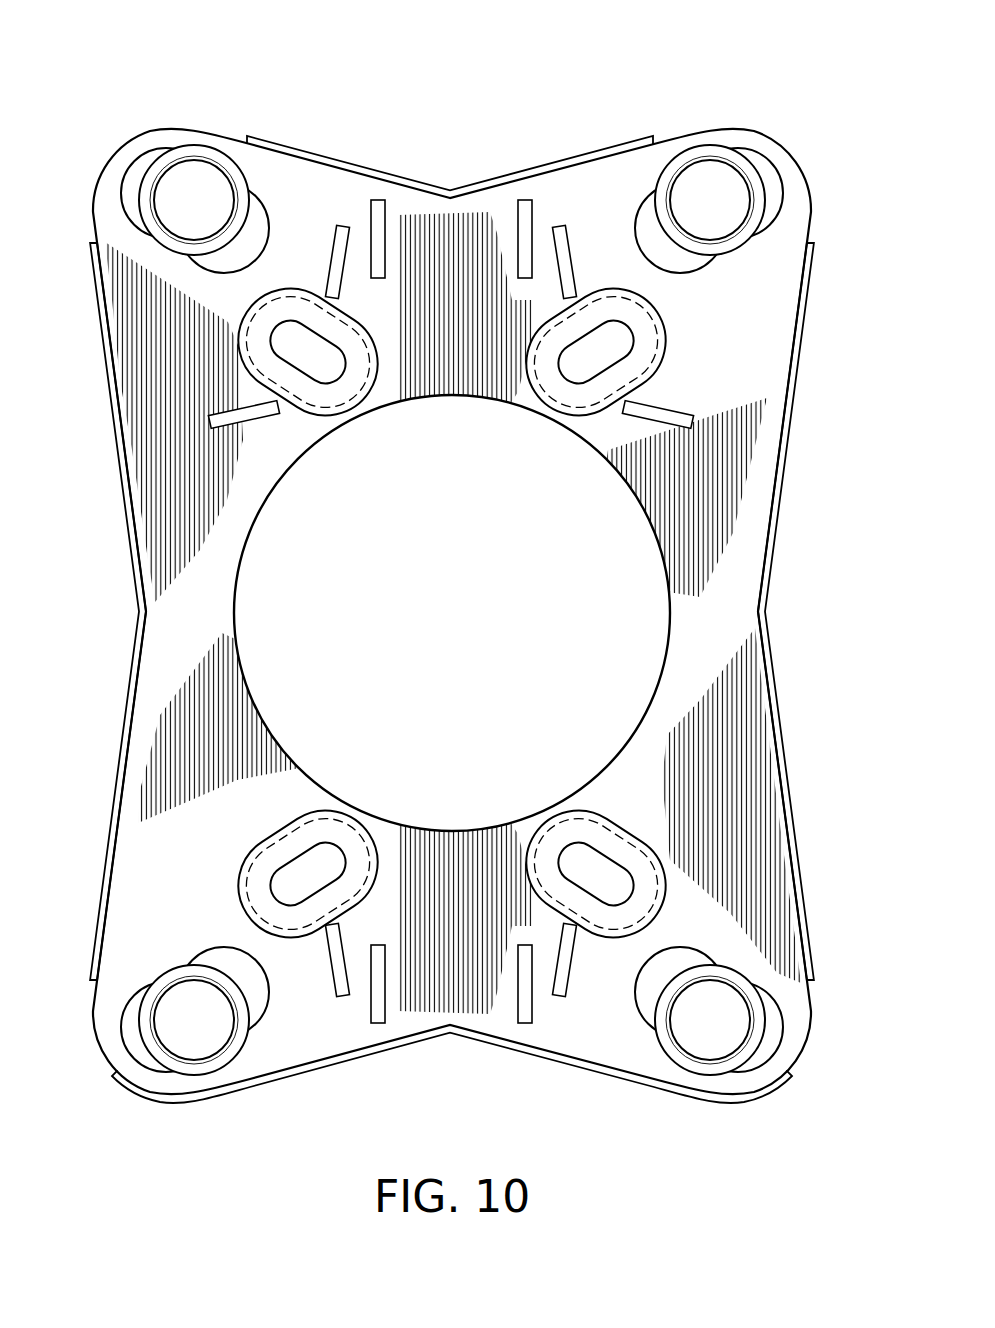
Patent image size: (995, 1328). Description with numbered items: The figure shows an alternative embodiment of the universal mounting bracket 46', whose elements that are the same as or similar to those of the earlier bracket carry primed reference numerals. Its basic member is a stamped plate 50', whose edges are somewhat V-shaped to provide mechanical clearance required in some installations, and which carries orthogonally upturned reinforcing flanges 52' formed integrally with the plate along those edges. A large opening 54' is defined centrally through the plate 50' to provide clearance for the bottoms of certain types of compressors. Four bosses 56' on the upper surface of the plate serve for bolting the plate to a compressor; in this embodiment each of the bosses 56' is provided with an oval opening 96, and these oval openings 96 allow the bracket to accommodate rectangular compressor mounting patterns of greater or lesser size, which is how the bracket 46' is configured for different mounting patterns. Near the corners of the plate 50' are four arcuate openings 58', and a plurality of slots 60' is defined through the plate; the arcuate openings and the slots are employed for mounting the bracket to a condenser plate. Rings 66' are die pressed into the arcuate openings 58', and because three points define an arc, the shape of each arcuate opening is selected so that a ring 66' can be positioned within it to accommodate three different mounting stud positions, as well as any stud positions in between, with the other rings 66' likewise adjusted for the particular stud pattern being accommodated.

The universal mounting bracket 46' is at (462, 600).
The stamped plate 50' is at (484, 611).
The reinforcing flanges 52' is at (458, 612).
The large opening 54' is at (548, 613).
The bosses 56' is at (474, 596).
The arcuate openings 58' is at (454, 613).
The slots 60' is at (450, 552).
The rings 66' is at (452, 613).
The oval openings 96 is at (318, 358).